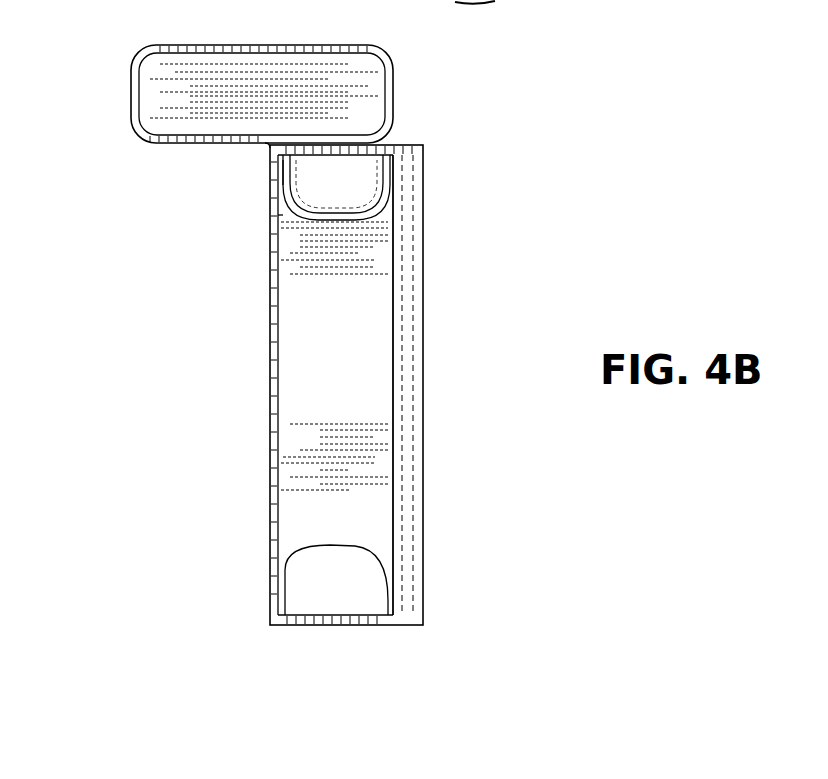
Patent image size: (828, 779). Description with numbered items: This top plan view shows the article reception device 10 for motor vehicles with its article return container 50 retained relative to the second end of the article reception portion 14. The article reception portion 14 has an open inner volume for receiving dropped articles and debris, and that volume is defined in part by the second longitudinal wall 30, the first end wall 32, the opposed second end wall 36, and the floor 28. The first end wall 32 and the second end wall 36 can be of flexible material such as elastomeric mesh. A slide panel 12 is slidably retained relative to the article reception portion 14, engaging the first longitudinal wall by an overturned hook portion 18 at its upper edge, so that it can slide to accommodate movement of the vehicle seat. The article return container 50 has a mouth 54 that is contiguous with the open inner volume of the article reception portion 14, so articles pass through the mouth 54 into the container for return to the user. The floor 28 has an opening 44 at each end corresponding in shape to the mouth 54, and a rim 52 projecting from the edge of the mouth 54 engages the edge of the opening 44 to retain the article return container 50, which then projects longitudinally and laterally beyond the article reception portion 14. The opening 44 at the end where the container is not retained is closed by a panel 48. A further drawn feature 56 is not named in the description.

The article reception device 10 is at (575, 150).
The slide panel 12 is at (475, 355).
The article reception portion 14 is at (220, 390).
The hook portion 18 is at (400, 417).
The floor 28 is at (347, 376).
The second longitudinal wall 30 is at (270, 467).
The first end wall 32 is at (345, 627).
The second end wall 36 is at (340, 146).
The opening 44 is at (307, 572).
The panel 48 is at (357, 183).
The article return container 50 is at (412, 103).
The rim 52 is at (280, 221).
The mouth 54 is at (293, 193).
The cap end 56 is at (131, 87).